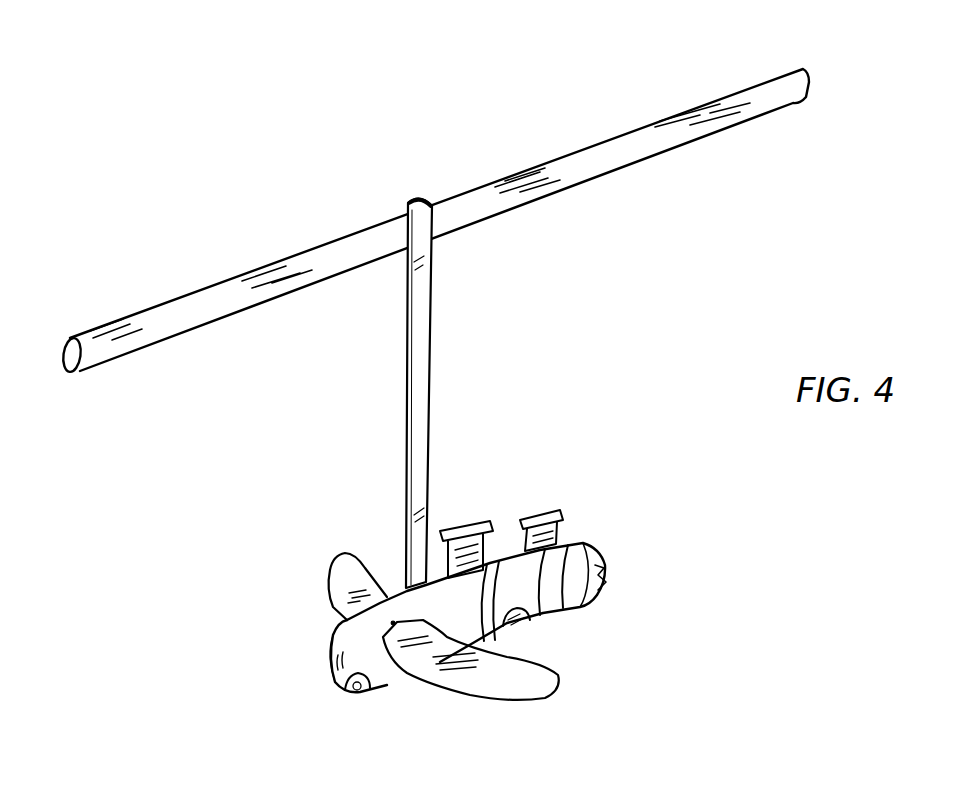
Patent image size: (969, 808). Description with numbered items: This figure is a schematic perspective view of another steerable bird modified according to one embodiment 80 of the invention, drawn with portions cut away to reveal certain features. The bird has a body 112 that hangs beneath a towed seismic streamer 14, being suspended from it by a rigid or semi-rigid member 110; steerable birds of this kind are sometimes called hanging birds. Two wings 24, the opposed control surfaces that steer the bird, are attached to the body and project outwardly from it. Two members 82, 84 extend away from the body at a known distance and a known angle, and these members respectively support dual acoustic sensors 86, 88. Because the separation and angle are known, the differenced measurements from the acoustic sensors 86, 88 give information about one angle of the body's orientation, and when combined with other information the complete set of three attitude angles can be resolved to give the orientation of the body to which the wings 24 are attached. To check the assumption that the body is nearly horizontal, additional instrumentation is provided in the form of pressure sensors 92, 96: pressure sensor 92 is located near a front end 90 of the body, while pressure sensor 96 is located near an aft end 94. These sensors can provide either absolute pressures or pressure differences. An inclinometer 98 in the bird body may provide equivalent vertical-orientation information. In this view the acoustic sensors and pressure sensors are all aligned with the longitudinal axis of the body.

The streamer 14 is at (757, 82).
The rigid or semi-rigid member 110 is at (433, 323).
The steering device embodiment 80 is at (757, 531).
The body 112 is at (328, 642).
The wings 24 is at (357, 591).
The member 82 is at (501, 527).
The member 84 is at (560, 530).
The acoustic sensor 86 is at (461, 522).
The acoustic sensor 88 is at (551, 510).
The aft end 94 is at (605, 550).
The pressure sensor 96 is at (608, 585).
The inclinometer 98 is at (540, 627).
The front end 90 is at (328, 672).
The pressure sensor 92 is at (357, 695).